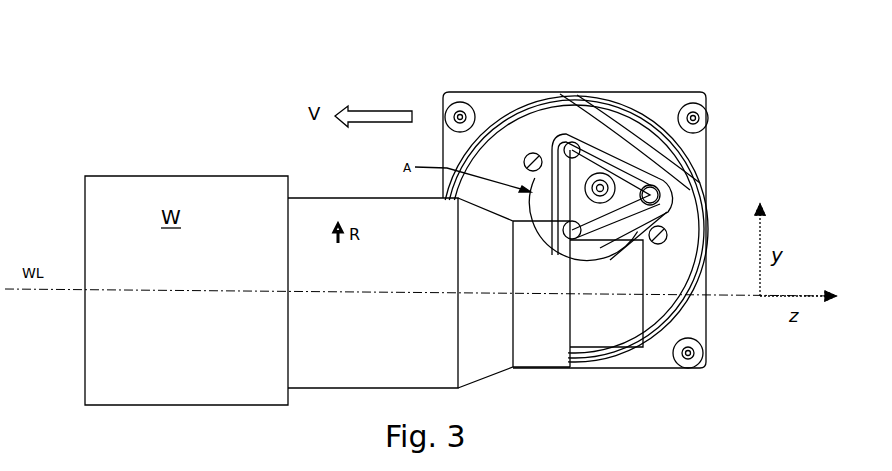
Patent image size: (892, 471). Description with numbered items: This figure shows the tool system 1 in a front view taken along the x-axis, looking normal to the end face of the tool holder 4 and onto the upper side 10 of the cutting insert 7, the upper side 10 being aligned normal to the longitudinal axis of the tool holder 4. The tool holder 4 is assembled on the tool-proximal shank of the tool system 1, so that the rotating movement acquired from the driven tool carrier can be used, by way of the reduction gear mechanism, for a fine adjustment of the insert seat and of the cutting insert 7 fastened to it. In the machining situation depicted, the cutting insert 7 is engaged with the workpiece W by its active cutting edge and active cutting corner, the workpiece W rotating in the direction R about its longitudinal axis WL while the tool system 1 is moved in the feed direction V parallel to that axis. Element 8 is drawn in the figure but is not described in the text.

The tool system 1 is at (628, 68).
The tool holder 4 is at (558, 125).
The cutting insert 7 is at (626, 185).
The upper side 10 is at (650, 195).
The pin 8 is at (567, 238).